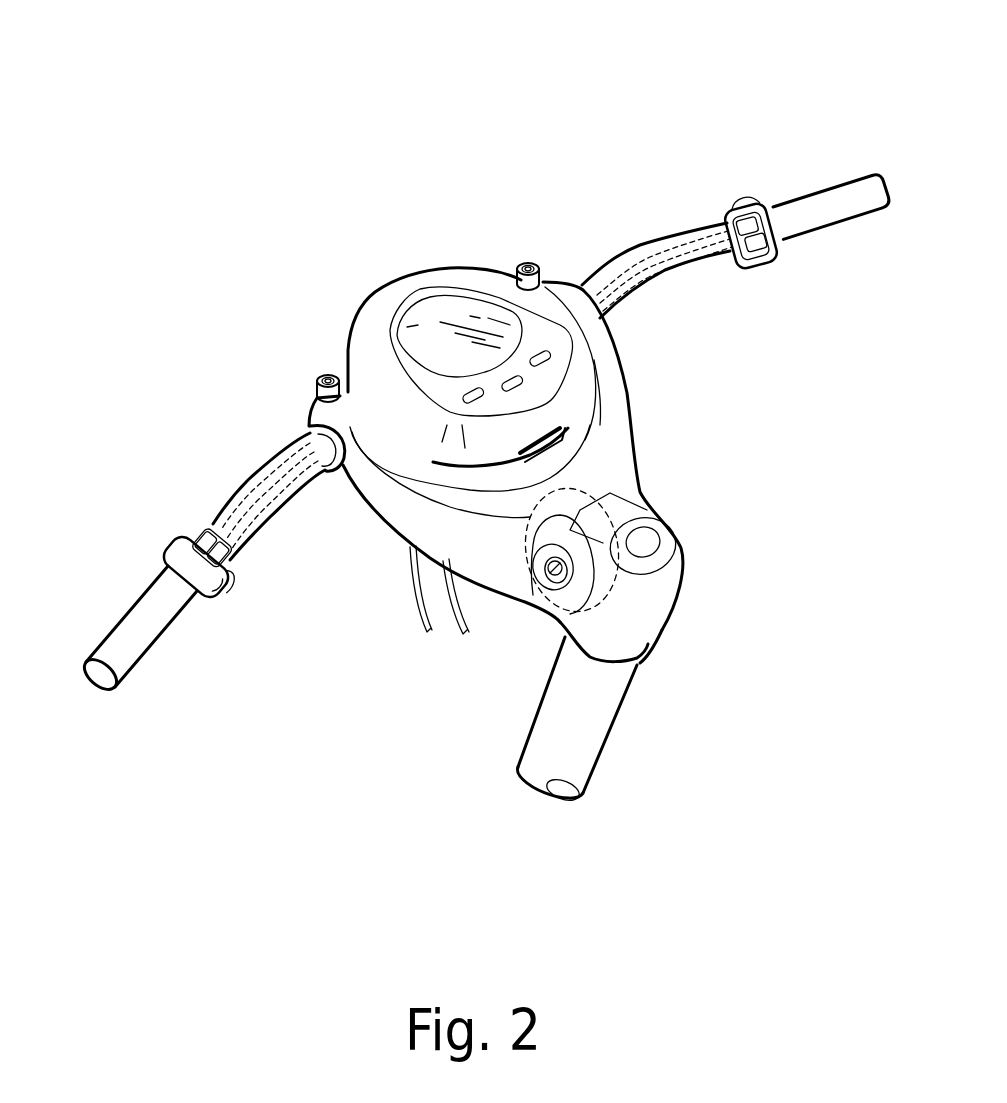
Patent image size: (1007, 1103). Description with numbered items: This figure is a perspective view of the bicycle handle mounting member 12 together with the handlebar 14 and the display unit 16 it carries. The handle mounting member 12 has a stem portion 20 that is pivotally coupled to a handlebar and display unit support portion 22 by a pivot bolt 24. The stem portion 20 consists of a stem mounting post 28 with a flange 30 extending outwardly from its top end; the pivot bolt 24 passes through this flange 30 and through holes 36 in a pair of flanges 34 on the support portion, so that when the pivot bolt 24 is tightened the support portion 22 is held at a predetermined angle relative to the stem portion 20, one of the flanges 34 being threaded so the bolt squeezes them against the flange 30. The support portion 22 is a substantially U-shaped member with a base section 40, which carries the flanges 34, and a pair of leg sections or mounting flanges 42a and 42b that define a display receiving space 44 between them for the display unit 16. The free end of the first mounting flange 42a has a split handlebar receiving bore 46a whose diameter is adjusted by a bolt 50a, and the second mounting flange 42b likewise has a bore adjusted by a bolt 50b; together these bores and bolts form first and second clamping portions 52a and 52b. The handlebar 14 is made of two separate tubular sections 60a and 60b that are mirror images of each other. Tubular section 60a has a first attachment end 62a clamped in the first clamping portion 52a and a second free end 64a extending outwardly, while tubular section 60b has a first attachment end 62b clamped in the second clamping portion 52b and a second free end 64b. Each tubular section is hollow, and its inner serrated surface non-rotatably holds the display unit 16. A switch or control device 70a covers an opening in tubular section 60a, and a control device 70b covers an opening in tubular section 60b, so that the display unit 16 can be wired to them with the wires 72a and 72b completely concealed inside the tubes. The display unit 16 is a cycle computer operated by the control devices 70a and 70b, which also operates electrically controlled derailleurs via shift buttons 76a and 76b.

The handle mounting member 12 is at (750, 451).
The handlebar 14 is at (597, 135).
The display unit 16 is at (412, 250).
The stem portion 20 is at (661, 643).
The handlebar and display unit support portion 22 is at (630, 392).
The pivot bolt 24 is at (556, 568).
The stem mounting post 28 is at (614, 732).
The flange 30 is at (611, 510).
The flanges 34 is at (651, 510).
The holes 36 is at (573, 584).
The base section 40 is at (506, 503).
The first mounting flange 42a is at (384, 503).
The second mounting flange 42b is at (614, 343).
The display receiving space 44 is at (550, 439).
The handlebar receiving bore 46a is at (319, 438).
The bolt 50a is at (324, 373).
The bolt 50b is at (526, 262).
The first clamping portion 52a is at (313, 398).
The second clamping portion 52b is at (548, 268).
The tubular section 60a is at (216, 507).
The tubular section 60b is at (708, 222).
The first attachment end 62a is at (307, 483).
The first attachment end 62b is at (621, 301).
The second free end 64a is at (139, 664).
The second free end 64b is at (868, 220).
The switch or control device 70a is at (214, 598).
The switch or control device 70b is at (776, 265).
The wires 72a is at (253, 503).
The wires 72b is at (684, 253).
The shift button 76a is at (213, 561).
The shift button 76b is at (768, 240).